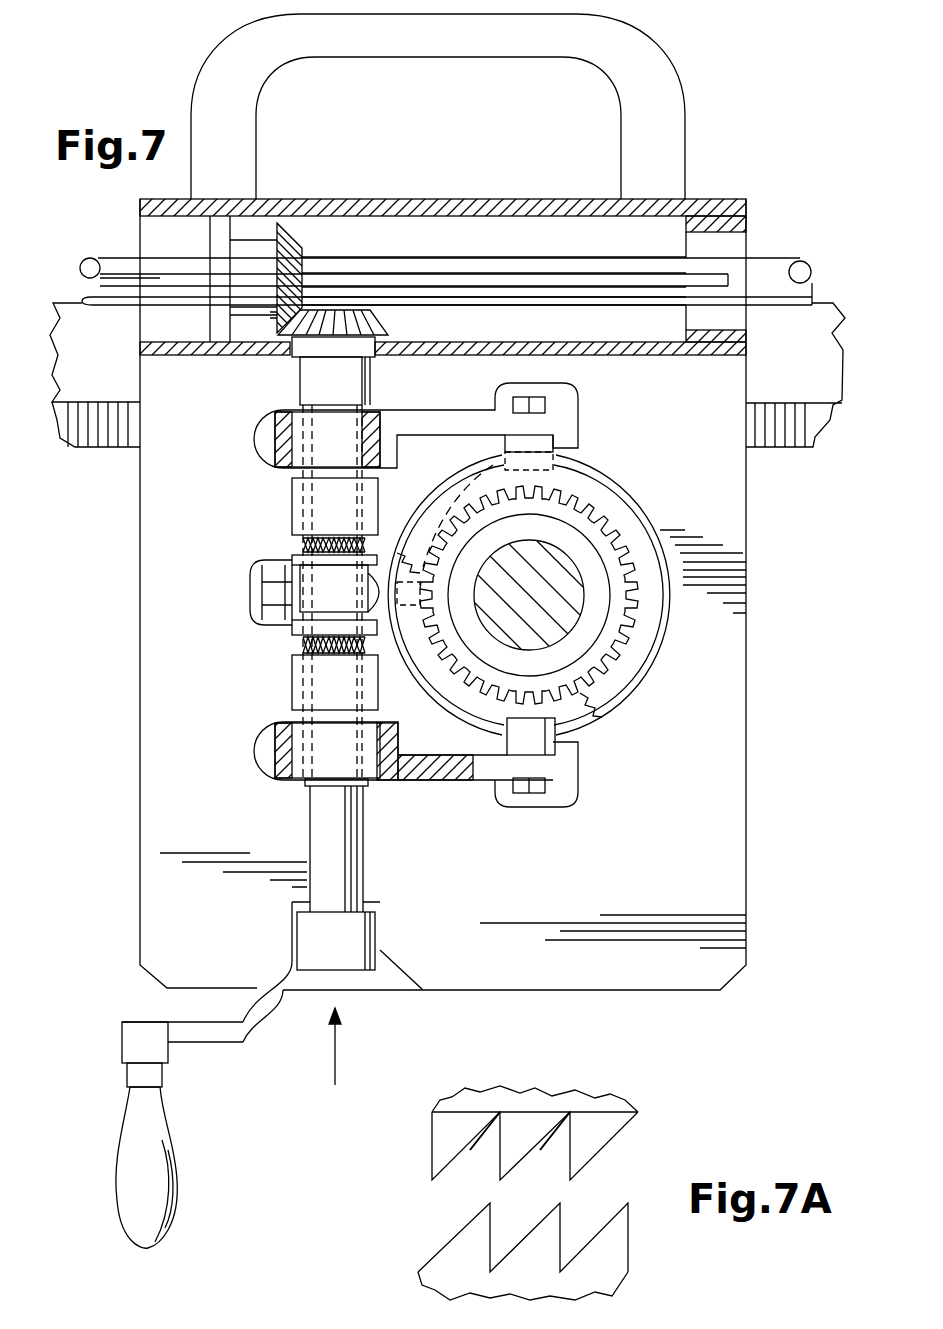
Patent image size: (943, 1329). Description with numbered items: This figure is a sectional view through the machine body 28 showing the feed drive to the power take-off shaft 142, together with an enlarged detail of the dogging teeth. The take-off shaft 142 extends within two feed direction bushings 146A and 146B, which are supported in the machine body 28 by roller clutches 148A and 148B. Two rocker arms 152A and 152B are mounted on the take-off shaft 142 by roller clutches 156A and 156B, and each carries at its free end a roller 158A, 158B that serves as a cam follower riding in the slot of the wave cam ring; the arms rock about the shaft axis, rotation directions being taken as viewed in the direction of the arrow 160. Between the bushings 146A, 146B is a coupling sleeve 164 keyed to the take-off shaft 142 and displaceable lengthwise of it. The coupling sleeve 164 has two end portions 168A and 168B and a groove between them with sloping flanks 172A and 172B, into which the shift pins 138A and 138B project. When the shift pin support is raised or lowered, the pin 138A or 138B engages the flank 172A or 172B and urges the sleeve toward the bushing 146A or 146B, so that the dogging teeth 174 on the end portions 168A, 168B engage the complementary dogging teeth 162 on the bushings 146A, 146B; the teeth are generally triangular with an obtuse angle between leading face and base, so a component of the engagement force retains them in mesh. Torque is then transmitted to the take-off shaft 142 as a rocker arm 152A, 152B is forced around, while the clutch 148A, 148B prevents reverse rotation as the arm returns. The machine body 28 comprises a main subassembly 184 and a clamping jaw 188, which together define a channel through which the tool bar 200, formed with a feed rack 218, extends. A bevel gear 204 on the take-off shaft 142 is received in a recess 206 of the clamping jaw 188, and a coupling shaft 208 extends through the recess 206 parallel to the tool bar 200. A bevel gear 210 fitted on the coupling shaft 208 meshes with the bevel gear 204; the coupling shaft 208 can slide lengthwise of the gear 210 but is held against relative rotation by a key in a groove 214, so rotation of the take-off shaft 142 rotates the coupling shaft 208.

In FIG. 7, the machine body 28 is at (118, 978).
In FIG. 7, the main subassembly 184 is at (150, 860).
In FIG. 7, the recess 206 is at (430, 214).
In FIG. 7, the clamping jaw 188 is at (718, 210).
In FIG. 7, the coupling shaft 208 is at (578, 248).
In FIG. 7, the tool bar 200 is at (826, 343).
In FIG. 7, the groove 214 is at (462, 270).
In FIG. 7, the bevel gear 210 is at (305, 240).
In FIG. 7, the bevel gear 204 is at (385, 322).
In FIG. 7, the power take-off shaft 142 is at (345, 880).
In FIG. 7, the feed direction bushing 146A is at (303, 397).
In FIG. 7, the rocker arm 152A is at (438, 425).
In FIG. 7, the roller clutch 156A is at (272, 440).
In FIG. 7, the roller 158A is at (556, 445).
In FIG. 7, the roller clutch 148A is at (292, 492).
In FIG. 7, the coupling sleeve 164 is at (330, 545).
In FIG. 7A, the coupling sleeve 164 is at (606, 1105).
In FIG. 7, the end portion 168A is at (303, 548).
In FIG. 7, the shift pin 138A is at (292, 572).
In FIG. 7, the sloping flank 172A is at (303, 582).
In FIG. 7, the shift pin 138B is at (292, 628).
In FIG. 7, the end portion 168B is at (303, 645).
In FIG. 7, the sloping flank 172B is at (310, 656).
In FIG. 7, the roller clutch 148B is at (292, 700).
In FIG. 7, the rocker arm 152B is at (505, 800).
In FIG. 7, the roller clutch 156B is at (275, 750).
In FIG. 7, the roller 158B is at (556, 762).
In FIG. 7, the feed direction bushing 146B is at (332, 790).
In FIG. 7A, the feed direction bushing 146B is at (600, 1268).
In FIG. 7, the arrow 160 is at (342, 1050).
In FIG. 7, the feed rack 218 is at (103, 447).
In FIG. 7, the dogging teeth 174 is at (529, 595).
In FIG. 7A, the dogging teeth 174 is at (578, 1160).
In FIG. 7A, the dogging teeth 162 is at (543, 1225).